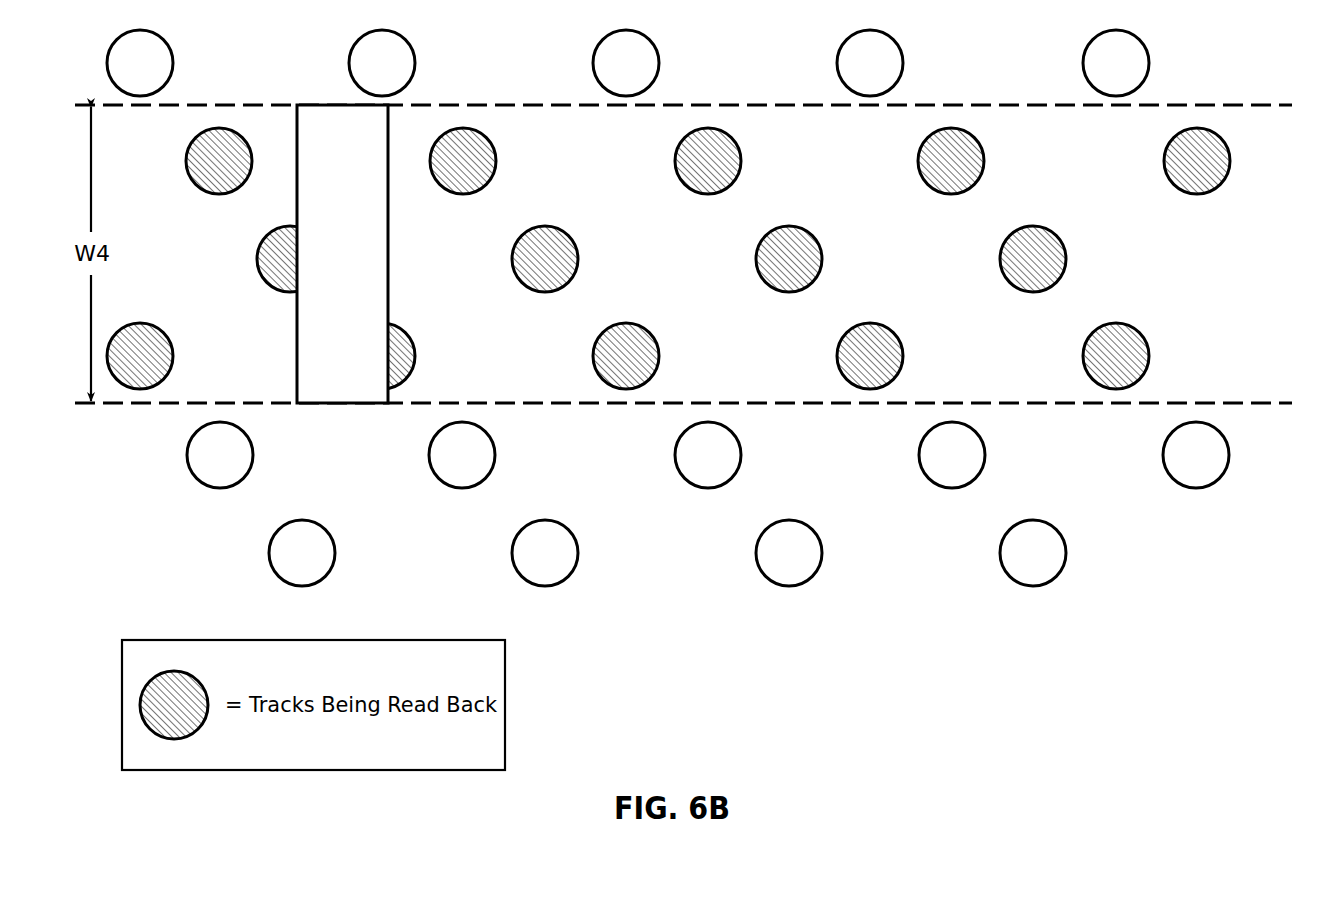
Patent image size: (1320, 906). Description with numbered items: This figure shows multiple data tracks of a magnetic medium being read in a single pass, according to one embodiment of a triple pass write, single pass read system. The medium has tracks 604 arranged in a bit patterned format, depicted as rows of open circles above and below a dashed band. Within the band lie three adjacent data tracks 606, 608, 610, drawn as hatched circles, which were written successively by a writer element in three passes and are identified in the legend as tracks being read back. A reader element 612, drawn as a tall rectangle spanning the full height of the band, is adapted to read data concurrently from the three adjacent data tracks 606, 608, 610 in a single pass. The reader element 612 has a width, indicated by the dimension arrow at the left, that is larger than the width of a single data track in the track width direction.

The tracks 604 is at (1204, 62).
The data track 606 is at (1239, 158).
The data track 608 is at (1212, 258).
The data track 610 is at (1214, 361).
The reader element 612 is at (342, 254).